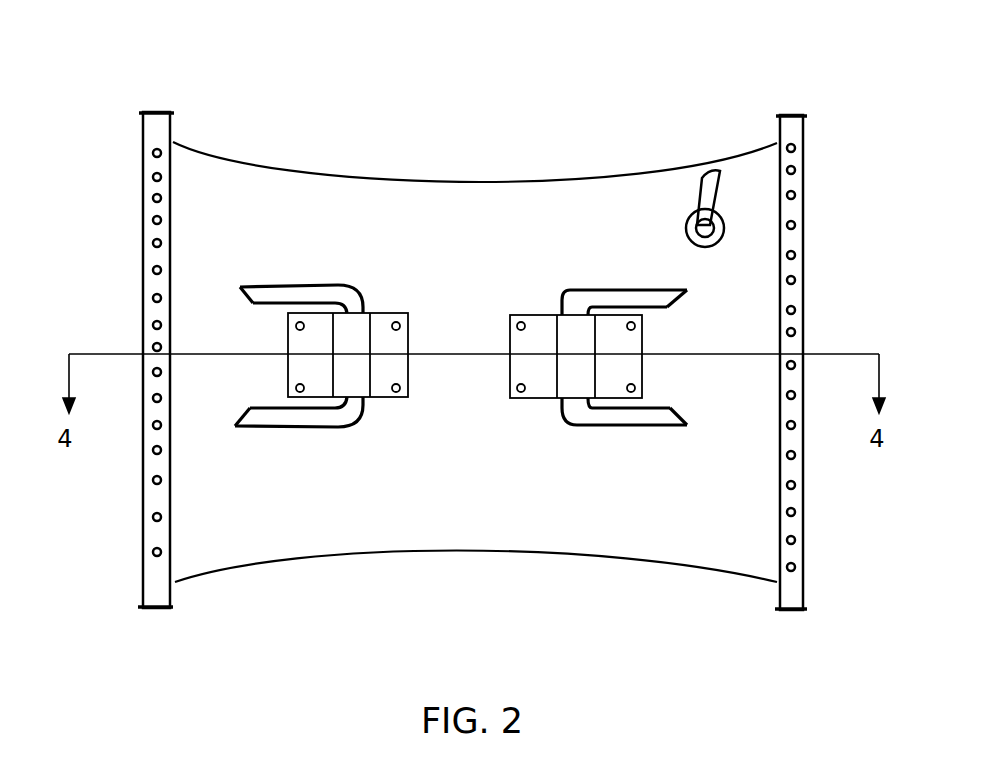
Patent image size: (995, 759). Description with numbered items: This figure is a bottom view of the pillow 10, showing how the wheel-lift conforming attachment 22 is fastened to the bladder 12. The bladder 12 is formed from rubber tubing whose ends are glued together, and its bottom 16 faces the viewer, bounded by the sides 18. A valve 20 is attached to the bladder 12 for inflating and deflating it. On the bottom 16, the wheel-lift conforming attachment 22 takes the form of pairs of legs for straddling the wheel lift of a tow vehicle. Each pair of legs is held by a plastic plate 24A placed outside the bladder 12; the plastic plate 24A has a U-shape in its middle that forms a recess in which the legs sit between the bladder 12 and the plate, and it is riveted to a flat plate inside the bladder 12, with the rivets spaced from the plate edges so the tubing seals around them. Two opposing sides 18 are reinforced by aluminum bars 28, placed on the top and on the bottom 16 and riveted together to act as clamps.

The pillow 10 is at (543, 110).
The bladder 12 is at (269, 235).
The bottom 16 is at (433, 193).
The sides 18 is at (553, 192).
The valve 20 is at (716, 170).
The wheel-lift conforming attachment 22 is at (302, 420).
The plastic plate 24A is at (395, 365).
The aluminum bars 28 is at (150, 203).